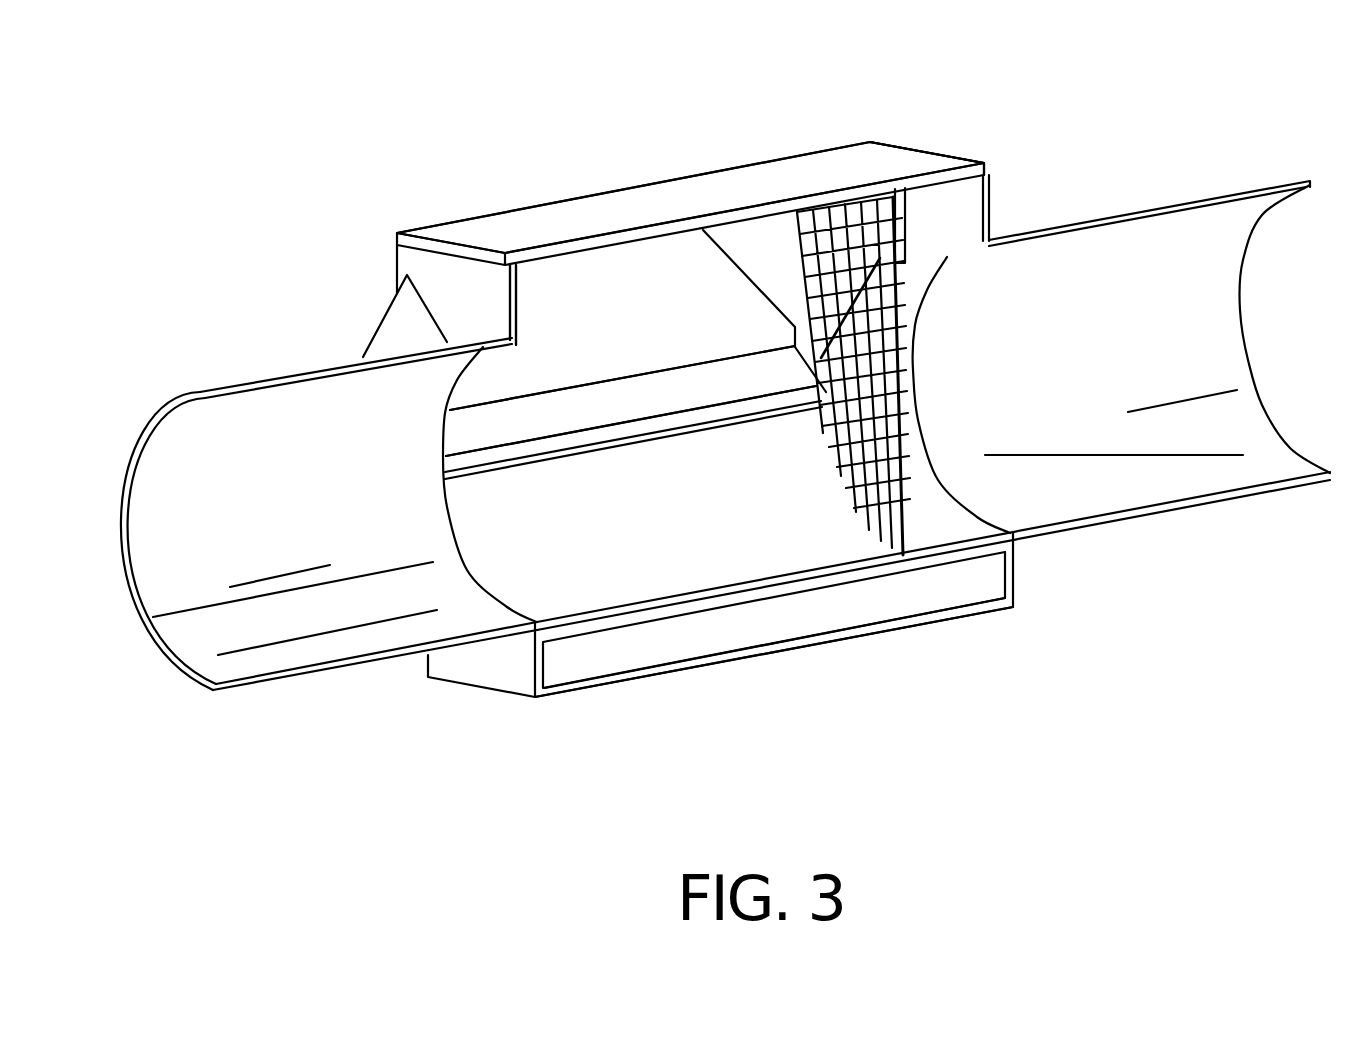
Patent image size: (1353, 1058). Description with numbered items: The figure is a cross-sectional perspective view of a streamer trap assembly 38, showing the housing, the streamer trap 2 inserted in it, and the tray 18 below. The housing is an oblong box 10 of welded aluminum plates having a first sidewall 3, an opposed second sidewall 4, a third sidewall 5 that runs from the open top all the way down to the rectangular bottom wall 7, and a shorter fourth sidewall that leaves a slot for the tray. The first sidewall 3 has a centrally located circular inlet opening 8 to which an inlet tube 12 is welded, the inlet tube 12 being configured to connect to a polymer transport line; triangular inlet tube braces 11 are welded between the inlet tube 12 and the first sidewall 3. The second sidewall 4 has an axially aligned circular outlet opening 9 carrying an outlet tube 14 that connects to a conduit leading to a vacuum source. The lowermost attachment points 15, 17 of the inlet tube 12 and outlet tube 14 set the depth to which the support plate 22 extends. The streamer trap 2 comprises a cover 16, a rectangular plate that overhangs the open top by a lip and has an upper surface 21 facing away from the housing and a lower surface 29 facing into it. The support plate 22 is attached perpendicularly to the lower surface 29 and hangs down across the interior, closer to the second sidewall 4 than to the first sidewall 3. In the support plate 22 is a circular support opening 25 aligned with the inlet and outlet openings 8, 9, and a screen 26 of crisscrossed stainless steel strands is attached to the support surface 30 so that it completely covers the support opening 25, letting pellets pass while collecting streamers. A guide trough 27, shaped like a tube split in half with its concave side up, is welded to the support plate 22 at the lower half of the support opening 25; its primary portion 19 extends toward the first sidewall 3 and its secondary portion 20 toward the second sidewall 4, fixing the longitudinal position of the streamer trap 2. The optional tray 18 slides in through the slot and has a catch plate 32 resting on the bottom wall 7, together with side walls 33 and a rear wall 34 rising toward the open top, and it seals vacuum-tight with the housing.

The streamer trap 2 is at (579, 179).
The first sidewall 3 is at (433, 657).
The second sidewall 4 is at (957, 228).
The third sidewall 5 is at (541, 293).
The bottom wall 7 is at (613, 687).
The circular inlet opening 8 is at (455, 373).
The circular outlet opening 9 is at (947, 258).
The oblong box 10 is at (418, 262).
The inlet tube brace 11 is at (402, 327).
The inlet tube 12 is at (277, 687).
The outlet tube 14 is at (1272, 490).
The lowermost attachment point of inlet tube 15 is at (530, 637).
The cover 16 is at (730, 193).
The lowermost attachment point of outlet tube 17 is at (1013, 538).
The tray 18 is at (683, 637).
The primary portion of guide trough 19 is at (508, 525).
The secondary portion of guide trough 20 is at (977, 455).
The upper surface 21 is at (730, 193).
The support plate 22 is at (955, 210).
The circular support opening 25 is at (903, 263).
The screen 26 is at (838, 487).
The guide trough 27 is at (508, 525).
The lower surface 29 is at (624, 247).
The support surface 30 is at (876, 205).
The catch plate 32 is at (683, 637).
The side walls of tray 33 is at (958, 563).
The rear wall of tray 34 is at (750, 597).
The streamer trap assembly 38 is at (216, 208).